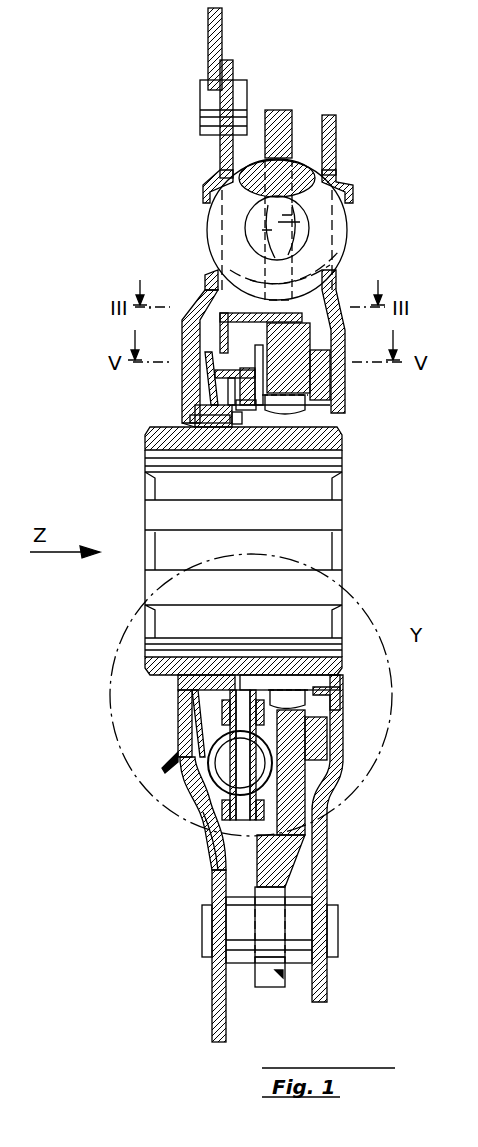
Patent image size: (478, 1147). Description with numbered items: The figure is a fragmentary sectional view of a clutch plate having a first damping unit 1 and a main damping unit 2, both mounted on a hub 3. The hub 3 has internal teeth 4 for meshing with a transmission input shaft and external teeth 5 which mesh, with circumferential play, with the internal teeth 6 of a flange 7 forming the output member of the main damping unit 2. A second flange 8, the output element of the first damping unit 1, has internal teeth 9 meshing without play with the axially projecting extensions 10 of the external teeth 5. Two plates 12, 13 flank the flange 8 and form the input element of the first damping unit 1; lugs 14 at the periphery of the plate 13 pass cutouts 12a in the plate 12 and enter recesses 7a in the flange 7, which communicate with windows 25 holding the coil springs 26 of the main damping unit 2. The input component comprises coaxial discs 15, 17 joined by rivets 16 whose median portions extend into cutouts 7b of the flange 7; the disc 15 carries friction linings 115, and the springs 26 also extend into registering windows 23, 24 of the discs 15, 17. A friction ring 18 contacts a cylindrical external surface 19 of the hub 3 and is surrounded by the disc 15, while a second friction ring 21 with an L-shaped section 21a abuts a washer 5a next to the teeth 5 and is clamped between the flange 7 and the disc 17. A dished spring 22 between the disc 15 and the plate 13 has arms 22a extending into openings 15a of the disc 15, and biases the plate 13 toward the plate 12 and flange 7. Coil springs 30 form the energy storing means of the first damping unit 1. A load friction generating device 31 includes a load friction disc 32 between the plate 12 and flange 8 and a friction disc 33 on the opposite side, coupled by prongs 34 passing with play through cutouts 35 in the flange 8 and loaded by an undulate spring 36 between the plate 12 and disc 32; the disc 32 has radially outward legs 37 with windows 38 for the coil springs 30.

The first damping unit 1 is at (115, 776).
The main damping unit 2 is at (185, 170).
The hub 3 is at (332, 440).
The internal teeth 4 is at (315, 650).
The external teeth 5 is at (338, 678).
The washer 5a is at (318, 405).
The internal teeth 6 is at (295, 700).
The flange 7 is at (283, 880).
The recesses 7a is at (330, 320).
The cutouts 7b is at (268, 988).
The second flange 8 is at (214, 862).
The internal teeth 9 is at (240, 430).
The extensions 10 is at (243, 415).
The plate 12 is at (305, 828).
The cutouts 12a is at (282, 300).
The plate 13 is at (208, 845).
The lugs 14 is at (203, 295).
The disc 15 is at (227, 60).
The openings 15a is at (186, 777).
The rivets 16 is at (235, 925).
The disc 17 is at (327, 978).
The friction ring 18 is at (180, 700).
The cylindrical external surface 19 is at (190, 430).
The second friction ring 21 is at (272, 760).
The L-shaped section 21a is at (330, 722).
The dished spring 22 is at (180, 727).
The arms 22a is at (170, 767).
The window 23 is at (212, 275).
The window 24 is at (336, 290).
The windows 25 is at (278, 150).
The coil springs 26 is at (345, 225).
The coil springs 30 is at (265, 778).
The load friction generating device 31 is at (250, 418).
The load friction disc 32 is at (245, 690).
The friction disc 33 is at (220, 395).
The prongs 34 is at (205, 372).
The cutouts 35 is at (230, 360).
The undulate spring 36 is at (258, 690).
The legs 37 is at (290, 855).
The windows 38 is at (330, 790).
The friction linings 115 is at (208, 28).